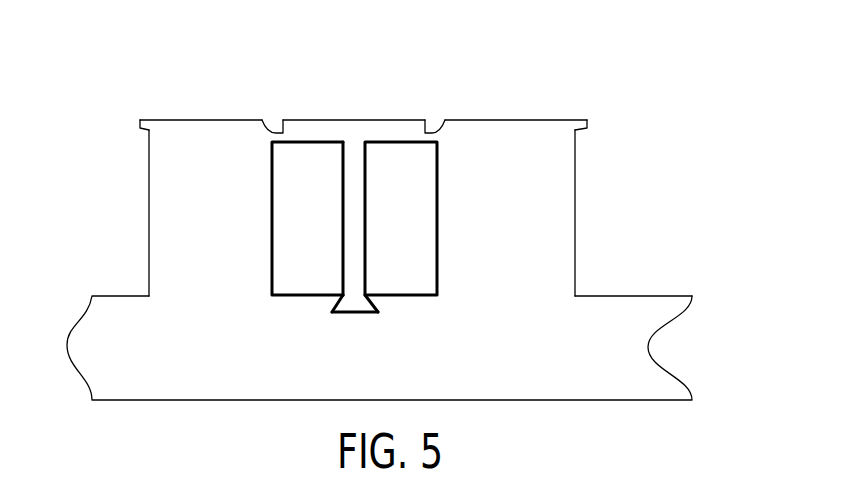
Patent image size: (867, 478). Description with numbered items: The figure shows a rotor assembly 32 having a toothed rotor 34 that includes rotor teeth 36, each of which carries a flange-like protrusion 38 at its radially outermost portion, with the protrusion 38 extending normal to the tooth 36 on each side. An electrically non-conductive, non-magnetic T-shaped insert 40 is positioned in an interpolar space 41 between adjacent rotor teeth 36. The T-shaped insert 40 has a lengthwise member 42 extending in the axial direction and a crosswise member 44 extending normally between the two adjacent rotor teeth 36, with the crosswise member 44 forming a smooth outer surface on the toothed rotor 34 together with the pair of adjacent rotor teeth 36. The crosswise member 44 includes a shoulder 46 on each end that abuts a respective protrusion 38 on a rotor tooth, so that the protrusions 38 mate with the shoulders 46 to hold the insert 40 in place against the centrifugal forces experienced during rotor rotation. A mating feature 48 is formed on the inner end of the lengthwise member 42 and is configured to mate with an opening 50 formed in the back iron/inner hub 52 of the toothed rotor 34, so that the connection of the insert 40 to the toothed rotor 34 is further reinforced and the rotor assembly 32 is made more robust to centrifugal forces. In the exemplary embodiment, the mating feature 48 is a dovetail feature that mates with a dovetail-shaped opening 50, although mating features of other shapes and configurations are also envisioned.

The rotor assembly 32 is at (488, 74).
The toothed rotor 34 is at (615, 171).
The rotor teeth 36 is at (149, 213).
The flange-like protrusion 38 is at (140, 120).
The T-shaped insert 40 is at (359, 108).
The interpolar space 41 is at (321, 218).
The lengthwise member 42 is at (342, 236).
The crosswise member 44 is at (401, 144).
The shoulder 46 is at (262, 120).
The mating feature 48 is at (370, 300).
The opening 50 is at (348, 321).
The back iron/inner hub 52 is at (632, 295).